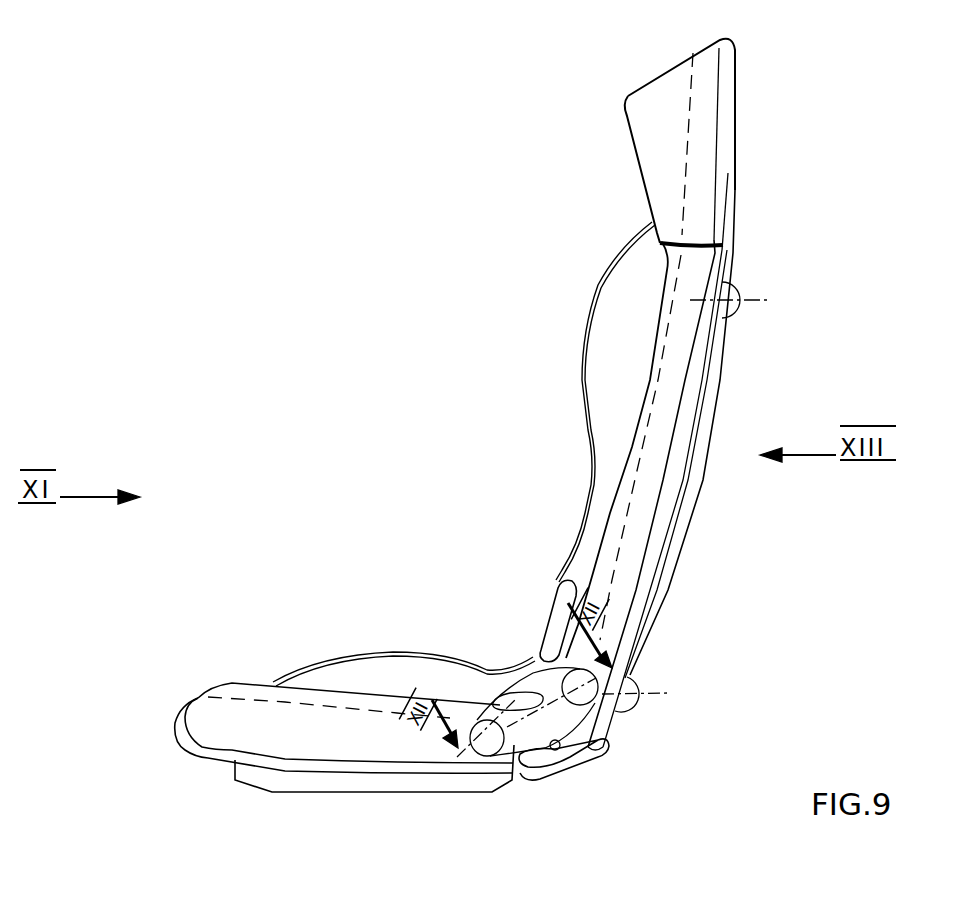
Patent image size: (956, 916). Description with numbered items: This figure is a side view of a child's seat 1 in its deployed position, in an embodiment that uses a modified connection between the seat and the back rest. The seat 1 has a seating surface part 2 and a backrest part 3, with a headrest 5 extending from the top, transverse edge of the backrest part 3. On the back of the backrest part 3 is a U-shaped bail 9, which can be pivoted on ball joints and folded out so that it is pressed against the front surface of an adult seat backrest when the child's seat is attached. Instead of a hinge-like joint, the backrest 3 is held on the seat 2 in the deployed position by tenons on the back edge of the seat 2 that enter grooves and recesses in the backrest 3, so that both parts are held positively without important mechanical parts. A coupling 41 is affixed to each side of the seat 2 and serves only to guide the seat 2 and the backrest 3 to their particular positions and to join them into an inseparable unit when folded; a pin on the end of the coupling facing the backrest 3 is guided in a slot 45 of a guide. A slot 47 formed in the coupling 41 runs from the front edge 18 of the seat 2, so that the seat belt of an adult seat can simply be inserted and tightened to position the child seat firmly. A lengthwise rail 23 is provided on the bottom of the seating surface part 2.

The child's seat 1 is at (498, 368).
The seating surface part 2 is at (268, 725).
The backrest part 3 is at (675, 358).
The headrest 5 is at (665, 110).
The U-shaped bail 9 is at (672, 573).
The front edge 18 is at (198, 698).
The lengthwise rail 23 is at (265, 772).
The coupling 41 is at (517, 743).
The slot 45 is at (560, 750).
The slot 47 is at (510, 703).